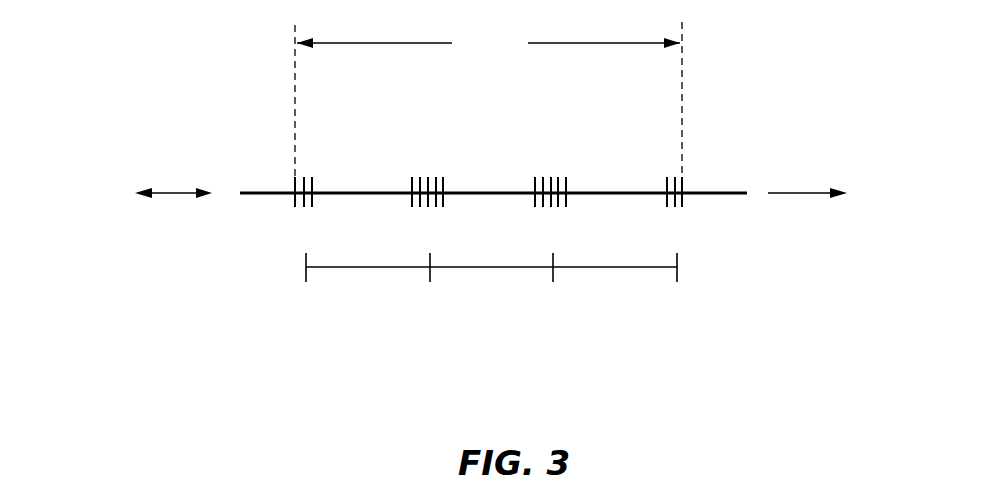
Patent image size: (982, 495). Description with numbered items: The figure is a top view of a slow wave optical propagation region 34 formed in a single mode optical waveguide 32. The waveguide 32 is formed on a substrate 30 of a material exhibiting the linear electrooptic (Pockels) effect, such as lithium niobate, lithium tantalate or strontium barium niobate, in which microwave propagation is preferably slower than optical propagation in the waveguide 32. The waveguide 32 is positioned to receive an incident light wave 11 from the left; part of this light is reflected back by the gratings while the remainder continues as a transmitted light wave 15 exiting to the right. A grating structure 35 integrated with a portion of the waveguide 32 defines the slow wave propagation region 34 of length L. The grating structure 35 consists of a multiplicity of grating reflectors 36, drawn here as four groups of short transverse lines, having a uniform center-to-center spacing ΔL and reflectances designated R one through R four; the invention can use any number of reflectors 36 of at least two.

The incident light wave 11 is at (126, 160).
The transmitted light wave 15 is at (833, 175).
The substrate 30 is at (548, 397).
The optical waveguide 32 is at (476, 234).
The slow wave propagation region 34 is at (668, 72).
The grating structure 35 is at (490, 128).
The grating reflectors 36 is at (421, 177).